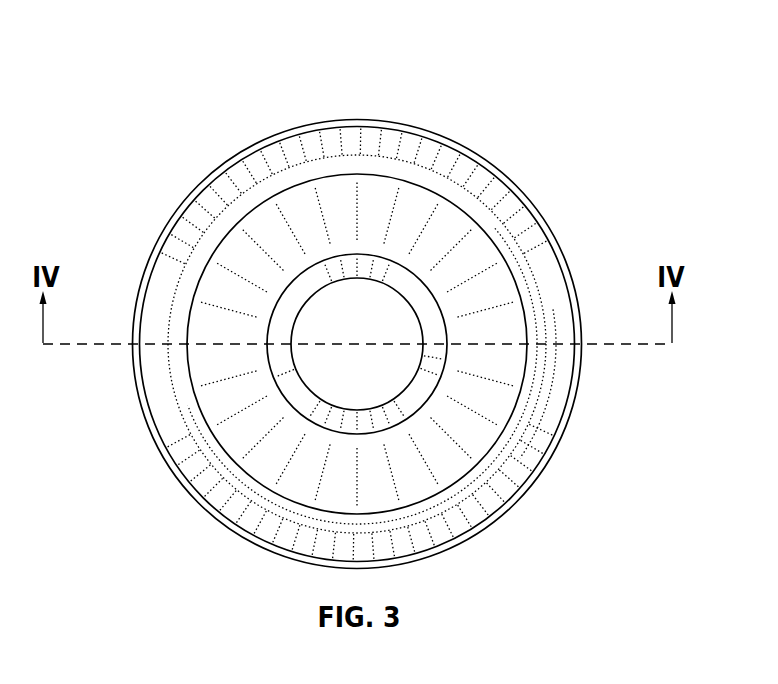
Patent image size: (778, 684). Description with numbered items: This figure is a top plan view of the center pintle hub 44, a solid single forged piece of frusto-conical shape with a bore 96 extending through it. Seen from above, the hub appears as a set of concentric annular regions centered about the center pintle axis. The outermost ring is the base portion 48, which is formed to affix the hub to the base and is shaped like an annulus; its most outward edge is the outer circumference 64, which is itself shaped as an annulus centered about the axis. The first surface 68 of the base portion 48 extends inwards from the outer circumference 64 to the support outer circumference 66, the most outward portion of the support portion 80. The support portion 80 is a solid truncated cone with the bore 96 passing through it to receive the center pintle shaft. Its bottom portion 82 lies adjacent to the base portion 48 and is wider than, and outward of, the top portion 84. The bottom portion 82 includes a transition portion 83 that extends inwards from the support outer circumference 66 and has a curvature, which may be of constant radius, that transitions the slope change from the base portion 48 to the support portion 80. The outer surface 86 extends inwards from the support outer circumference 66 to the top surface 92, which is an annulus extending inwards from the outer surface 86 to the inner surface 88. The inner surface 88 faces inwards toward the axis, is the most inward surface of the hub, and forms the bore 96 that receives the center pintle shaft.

The center pintle hub 44 is at (118, 40).
The base portion 48 is at (170, 267).
The outer circumference 64 is at (177, 215).
The support outer circumference 66 is at (337, 157).
The first surface 68 is at (212, 190).
The support portion 80 is at (501, 404).
The bottom portion 82 is at (337, 203).
The transition portion 83 is at (390, 167).
The top portion 84 is at (316, 255).
The outer surface 86 is at (415, 223).
The inner surface 88 is at (295, 384).
The top surface 92 is at (432, 312).
The bore 96 is at (370, 378).